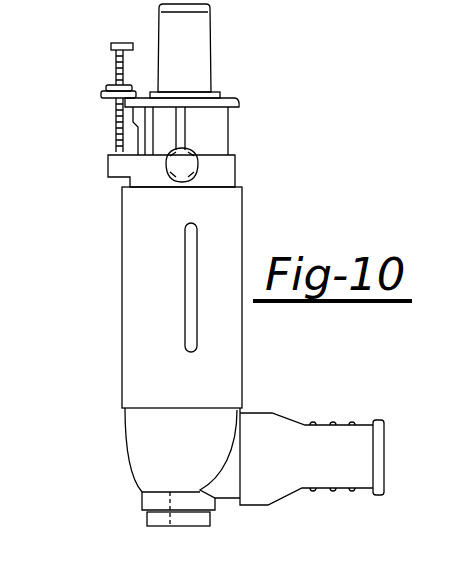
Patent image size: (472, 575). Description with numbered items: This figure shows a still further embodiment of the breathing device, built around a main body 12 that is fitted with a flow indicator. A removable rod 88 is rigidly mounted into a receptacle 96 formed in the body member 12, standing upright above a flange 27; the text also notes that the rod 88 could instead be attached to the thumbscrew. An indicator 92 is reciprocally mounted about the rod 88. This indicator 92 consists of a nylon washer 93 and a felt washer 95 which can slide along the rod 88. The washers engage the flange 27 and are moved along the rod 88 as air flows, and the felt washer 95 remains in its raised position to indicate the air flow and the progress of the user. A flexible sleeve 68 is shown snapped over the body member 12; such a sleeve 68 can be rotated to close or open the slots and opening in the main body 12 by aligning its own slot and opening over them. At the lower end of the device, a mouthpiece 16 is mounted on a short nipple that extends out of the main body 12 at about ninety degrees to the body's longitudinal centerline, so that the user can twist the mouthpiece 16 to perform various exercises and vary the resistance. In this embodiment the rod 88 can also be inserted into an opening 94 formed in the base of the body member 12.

The main body 12 is at (142, 447).
The mouthpiece 16 is at (327, 450).
The flange 27 is at (238, 103).
The flexible sleeve 68 is at (143, 343).
The removable rod 88 is at (115, 64).
The indicator 92 is at (72, 95).
The nylon washer 93 is at (101, 98).
The opening 94 is at (170, 533).
The felt washer 95 is at (103, 87).
The receptacle 96 is at (108, 167).